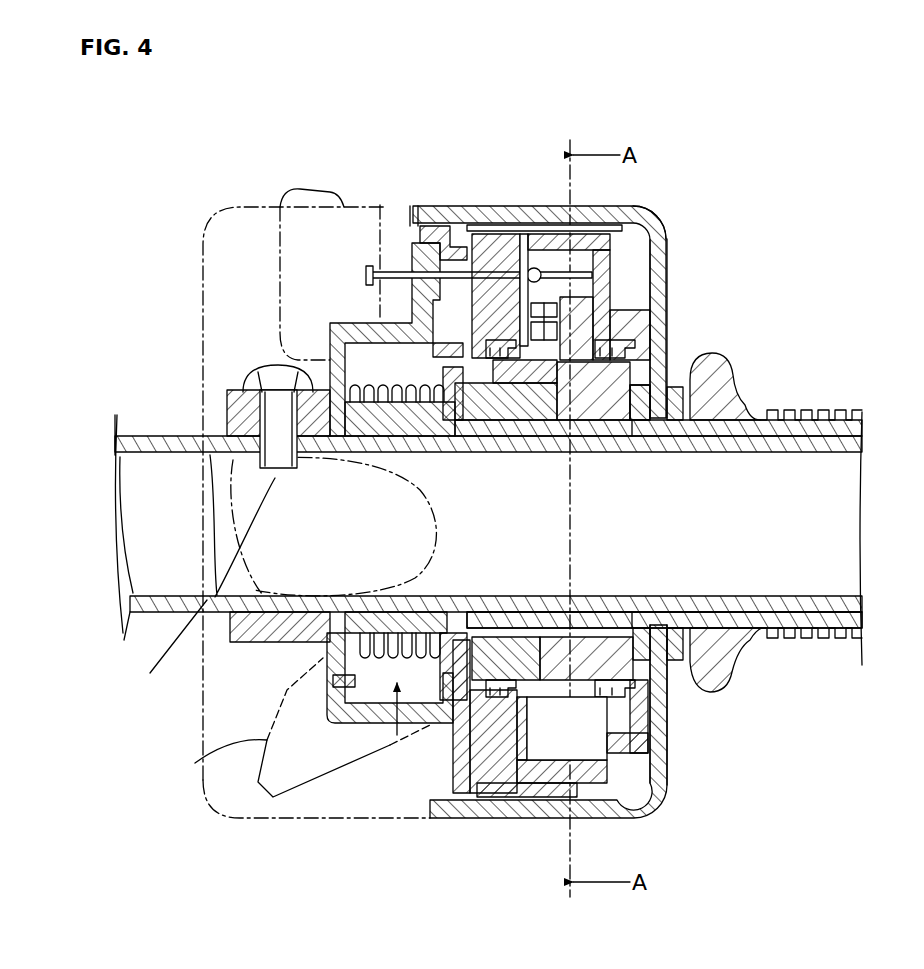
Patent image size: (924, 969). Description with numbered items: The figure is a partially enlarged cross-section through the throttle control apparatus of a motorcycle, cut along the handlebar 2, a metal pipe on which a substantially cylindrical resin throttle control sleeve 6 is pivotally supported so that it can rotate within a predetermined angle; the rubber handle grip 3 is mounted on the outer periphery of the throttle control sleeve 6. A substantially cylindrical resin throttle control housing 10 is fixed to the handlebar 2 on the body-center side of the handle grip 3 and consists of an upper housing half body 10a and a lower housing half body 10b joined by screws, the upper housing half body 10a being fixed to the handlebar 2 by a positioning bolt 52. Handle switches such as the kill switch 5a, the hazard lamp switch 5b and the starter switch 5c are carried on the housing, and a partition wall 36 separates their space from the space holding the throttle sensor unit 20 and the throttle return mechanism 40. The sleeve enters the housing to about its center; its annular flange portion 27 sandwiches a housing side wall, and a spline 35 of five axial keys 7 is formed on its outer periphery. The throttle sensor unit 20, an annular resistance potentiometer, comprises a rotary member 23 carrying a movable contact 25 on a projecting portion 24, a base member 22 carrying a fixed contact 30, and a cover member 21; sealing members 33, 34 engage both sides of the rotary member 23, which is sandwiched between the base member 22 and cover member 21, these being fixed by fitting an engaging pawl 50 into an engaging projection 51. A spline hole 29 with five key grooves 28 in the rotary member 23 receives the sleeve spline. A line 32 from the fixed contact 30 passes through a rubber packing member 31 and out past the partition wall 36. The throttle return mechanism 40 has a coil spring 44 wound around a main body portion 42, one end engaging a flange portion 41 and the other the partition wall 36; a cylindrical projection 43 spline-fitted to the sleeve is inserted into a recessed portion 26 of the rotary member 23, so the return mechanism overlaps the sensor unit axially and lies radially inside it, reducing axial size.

The handlebar 2 is at (160, 432).
The handle grip 3 is at (833, 405).
The kill switch 5a is at (282, 232).
The hazard lamp switch 5b is at (170, 655).
The starter switch 5c is at (195, 763).
The throttle control sleeve 6 is at (790, 405).
The axial keys 7 is at (645, 367).
The throttle control housing 10 is at (662, 803).
The upper housing half body 10a is at (610, 205).
The lower housing half body 10b is at (620, 807).
The throttle sensor unit 20 is at (650, 218).
The cover member 21 is at (620, 228).
The base member 22 is at (478, 235).
The rotary member 23 is at (633, 733).
The projecting portion 24 is at (573, 317).
The movable contact 25 is at (600, 272).
The recessed portion 26 is at (550, 405).
The annular flange portion 27 is at (687, 698).
The key grooves 28 is at (590, 635).
The spline hole 29 is at (664, 620).
The fixed contact 30 is at (538, 240).
The packing member 31 is at (403, 268).
The line 32 is at (395, 247).
The sealing member 33 is at (645, 702).
The sealing member 34 is at (470, 800).
The spline 35 is at (640, 402).
The partition wall 36 is at (347, 333).
The throttle return mechanism 40 is at (395, 735).
The flange portion 41 is at (447, 688).
The main body portion 42 is at (415, 625).
The cylindrical projection 43 is at (525, 643).
The coil spring 44 is at (340, 690).
The engaging pawl 50 is at (532, 783).
The engaging projection 51 is at (570, 727).
The positioning bolt 52 is at (250, 365).